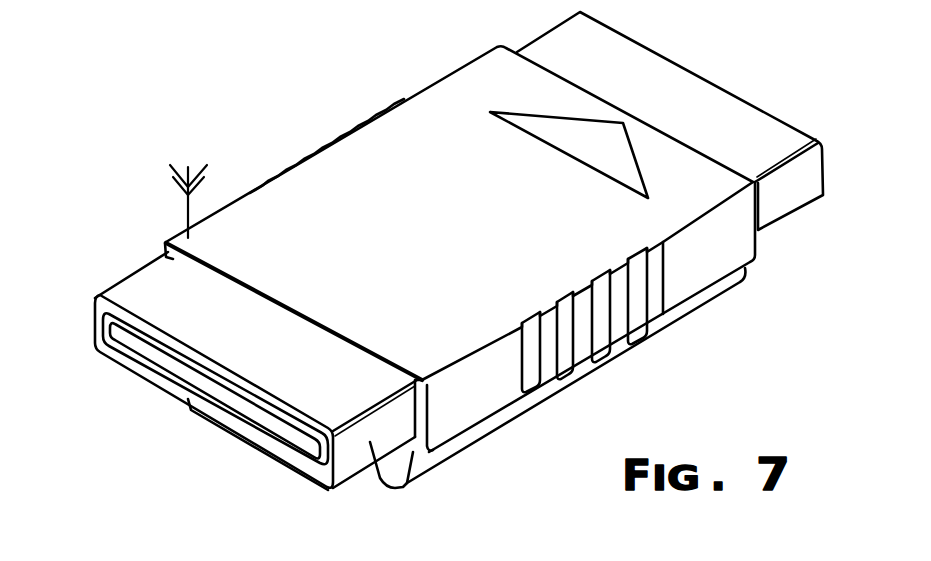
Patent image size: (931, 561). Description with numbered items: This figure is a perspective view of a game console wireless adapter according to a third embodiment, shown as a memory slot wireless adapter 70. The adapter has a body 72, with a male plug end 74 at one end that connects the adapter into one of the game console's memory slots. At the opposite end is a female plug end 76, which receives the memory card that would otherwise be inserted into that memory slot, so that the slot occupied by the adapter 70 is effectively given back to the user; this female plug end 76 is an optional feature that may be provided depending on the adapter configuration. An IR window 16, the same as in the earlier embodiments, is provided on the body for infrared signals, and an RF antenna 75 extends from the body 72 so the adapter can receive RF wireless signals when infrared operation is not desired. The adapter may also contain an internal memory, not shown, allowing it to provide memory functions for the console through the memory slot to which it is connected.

The IR window 16 is at (218, 425).
The memory slot wireless adapter 70 is at (263, 132).
The body 72 is at (377, 124).
The male plug end 74 is at (722, 103).
The RF antenna 75 is at (186, 202).
The female plug end 76 is at (117, 303).